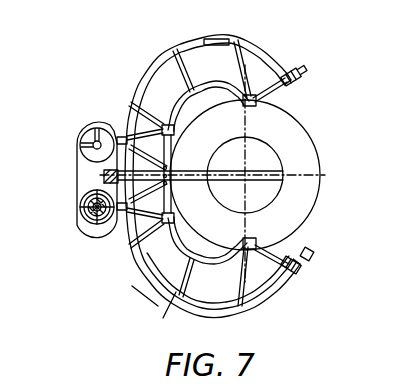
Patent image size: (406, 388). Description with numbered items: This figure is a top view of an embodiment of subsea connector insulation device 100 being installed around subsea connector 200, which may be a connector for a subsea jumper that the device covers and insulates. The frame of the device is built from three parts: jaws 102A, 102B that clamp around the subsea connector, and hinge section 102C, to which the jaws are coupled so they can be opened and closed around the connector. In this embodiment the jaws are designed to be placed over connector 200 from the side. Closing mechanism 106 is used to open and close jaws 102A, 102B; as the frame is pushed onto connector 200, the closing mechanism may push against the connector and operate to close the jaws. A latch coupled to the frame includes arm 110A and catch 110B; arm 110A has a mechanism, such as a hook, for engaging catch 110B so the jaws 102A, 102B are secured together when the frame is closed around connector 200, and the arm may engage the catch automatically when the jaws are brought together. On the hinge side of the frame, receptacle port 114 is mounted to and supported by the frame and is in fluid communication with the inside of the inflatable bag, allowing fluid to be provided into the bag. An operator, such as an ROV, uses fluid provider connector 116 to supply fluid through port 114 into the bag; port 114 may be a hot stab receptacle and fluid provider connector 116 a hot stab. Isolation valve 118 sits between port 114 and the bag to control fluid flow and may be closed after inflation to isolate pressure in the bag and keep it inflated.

The subsea connector insulation device 100 is at (121, 48).
The jaw 102A is at (261, 53).
The jaw 102B is at (152, 287).
The hinge section 102C is at (122, 135).
The closing mechanism 106 is at (104, 174).
The arm 110A is at (300, 263).
The catch 110B is at (304, 72).
The receptacle port 114 is at (92, 227).
The fluid provider connector 116 is at (90, 208).
The isolation valve 118 is at (82, 128).
The subsea connector 200 is at (310, 147).